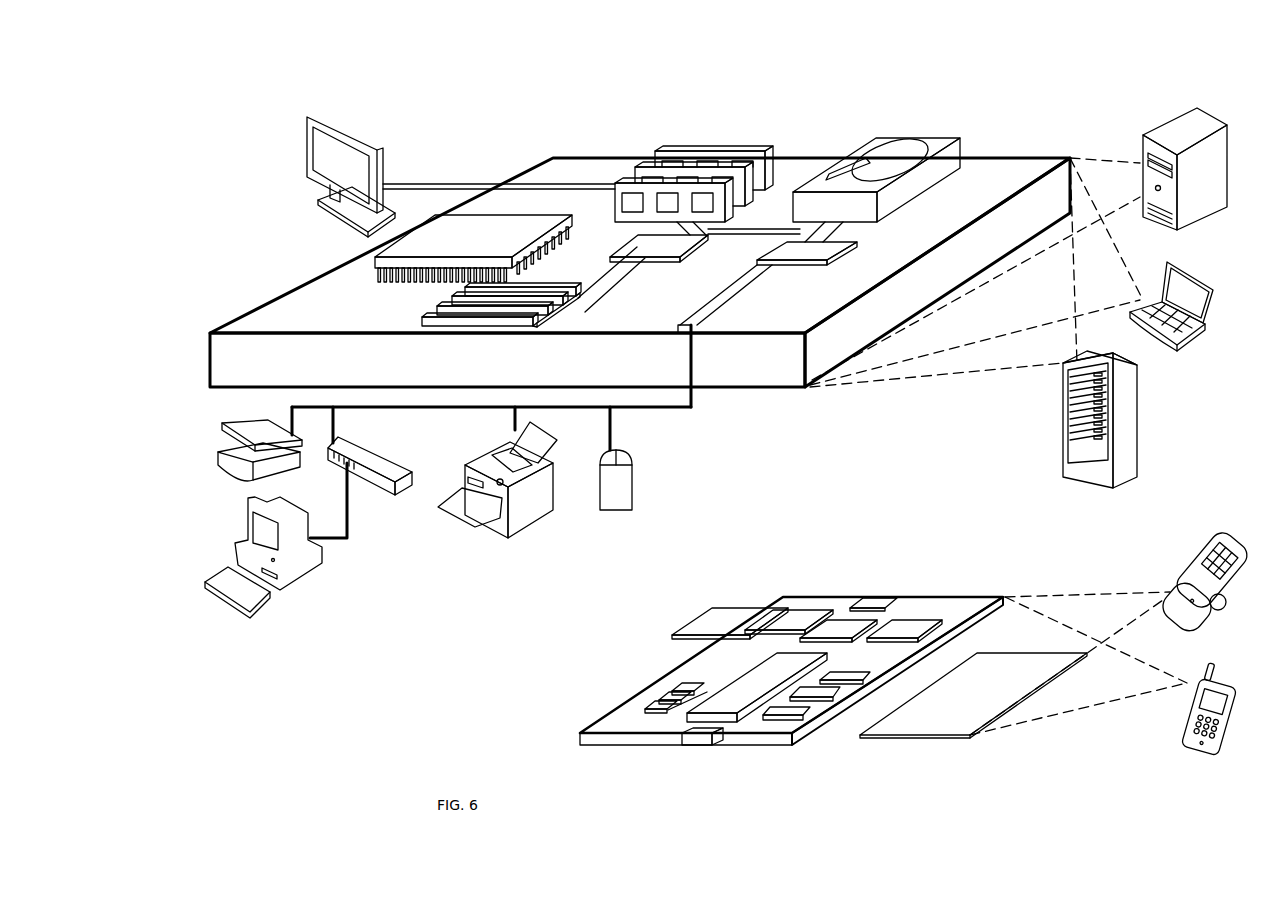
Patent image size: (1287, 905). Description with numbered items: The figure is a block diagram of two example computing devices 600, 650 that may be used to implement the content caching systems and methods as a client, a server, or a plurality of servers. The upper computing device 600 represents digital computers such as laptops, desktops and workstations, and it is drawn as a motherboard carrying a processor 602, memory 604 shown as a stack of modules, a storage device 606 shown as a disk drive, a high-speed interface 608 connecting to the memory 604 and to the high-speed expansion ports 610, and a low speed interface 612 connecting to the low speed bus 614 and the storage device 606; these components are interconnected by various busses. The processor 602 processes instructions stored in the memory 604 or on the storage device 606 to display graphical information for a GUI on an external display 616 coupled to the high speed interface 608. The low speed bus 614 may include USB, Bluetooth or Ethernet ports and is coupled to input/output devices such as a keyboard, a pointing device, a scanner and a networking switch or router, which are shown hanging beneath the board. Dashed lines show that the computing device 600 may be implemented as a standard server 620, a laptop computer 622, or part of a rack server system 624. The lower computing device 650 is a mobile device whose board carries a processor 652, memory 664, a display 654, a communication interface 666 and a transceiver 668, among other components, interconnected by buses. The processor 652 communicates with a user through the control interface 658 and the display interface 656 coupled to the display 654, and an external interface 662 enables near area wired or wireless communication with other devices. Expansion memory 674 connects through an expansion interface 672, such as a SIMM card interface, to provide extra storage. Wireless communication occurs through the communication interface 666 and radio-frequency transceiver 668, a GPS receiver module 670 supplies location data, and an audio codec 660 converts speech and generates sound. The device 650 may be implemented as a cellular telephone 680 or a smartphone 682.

The computing device 600 is at (430, 84).
The processor 602 is at (375, 262).
The memory 604 is at (665, 152).
The storage device 606 is at (867, 162).
The high-speed interface 608 is at (637, 240).
The high-speed expansion ports 610 is at (433, 298).
The low speed interface 612 is at (807, 252).
The low speed bus 614 is at (700, 334).
The display 616 is at (307, 118).
The standard server 620 is at (1142, 143).
The laptop computer 622 is at (1167, 263).
The rack server system 624 is at (1063, 443).
The computing device 650 is at (778, 566).
The processor 652 is at (727, 738).
The display 654 is at (973, 738).
The display interface 656 is at (803, 718).
The control interface 658 is at (827, 702).
The audio codec 660 is at (843, 682).
The external interface 662 is at (705, 740).
The memory 664 is at (656, 703).
The communication interface 666 is at (837, 627).
The transceiver 668 is at (903, 628).
The GPS receiver module 670 is at (872, 593).
The expansion interface 672 is at (770, 605).
The expansion memory 674 is at (712, 606).
The cellular telephone 680 is at (1212, 543).
The smartphone 682 is at (1197, 667).